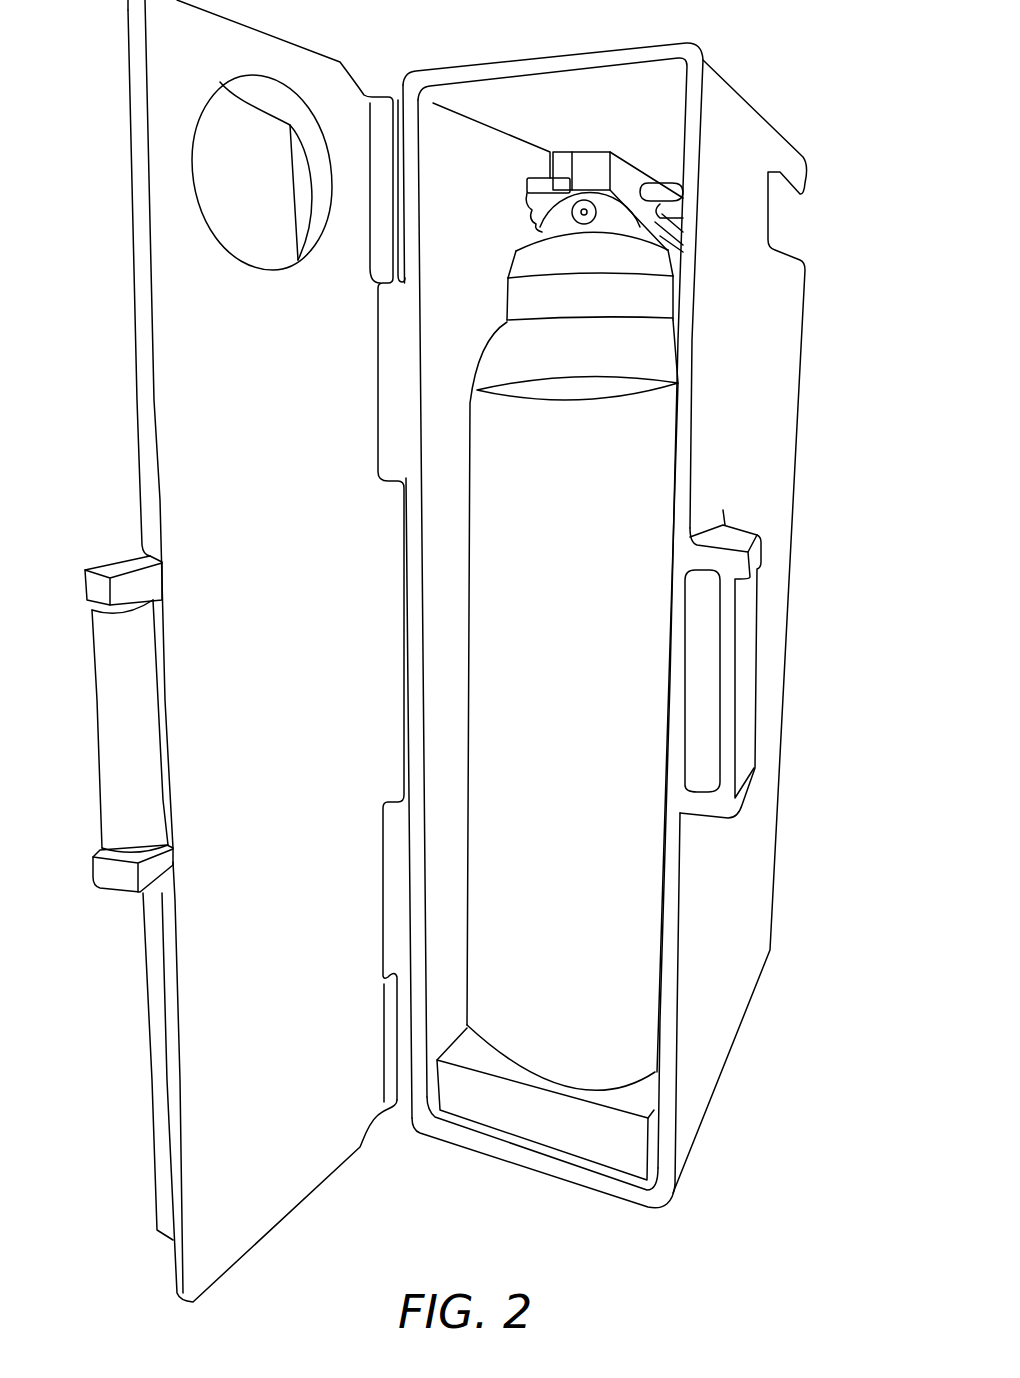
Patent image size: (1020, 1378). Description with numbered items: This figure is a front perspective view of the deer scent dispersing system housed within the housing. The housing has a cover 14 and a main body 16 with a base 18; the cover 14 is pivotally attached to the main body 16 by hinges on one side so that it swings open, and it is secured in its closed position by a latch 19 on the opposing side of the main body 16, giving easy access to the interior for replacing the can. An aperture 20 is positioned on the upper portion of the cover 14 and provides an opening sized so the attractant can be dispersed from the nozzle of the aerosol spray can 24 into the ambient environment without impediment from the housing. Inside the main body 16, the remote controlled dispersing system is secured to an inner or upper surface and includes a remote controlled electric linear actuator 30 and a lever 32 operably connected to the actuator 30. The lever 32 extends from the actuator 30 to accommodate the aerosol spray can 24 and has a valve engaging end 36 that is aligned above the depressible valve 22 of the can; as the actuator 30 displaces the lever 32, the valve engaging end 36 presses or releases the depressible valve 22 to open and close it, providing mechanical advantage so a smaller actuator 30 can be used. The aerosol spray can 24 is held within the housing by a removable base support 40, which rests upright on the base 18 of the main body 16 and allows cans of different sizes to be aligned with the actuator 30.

The cover 14 is at (152, 440).
The main body 16 is at (725, 52).
The base 18 is at (553, 1165).
The latch 19 is at (722, 660).
The aperture 20 is at (222, 125).
The depressible valve 22 is at (618, 250).
The aerosol spray can 24 is at (655, 458).
The actuator 30 is at (683, 205).
The lever 32 is at (652, 165).
The valve engaging end 36 is at (578, 158).
The base support 40 is at (620, 1143).